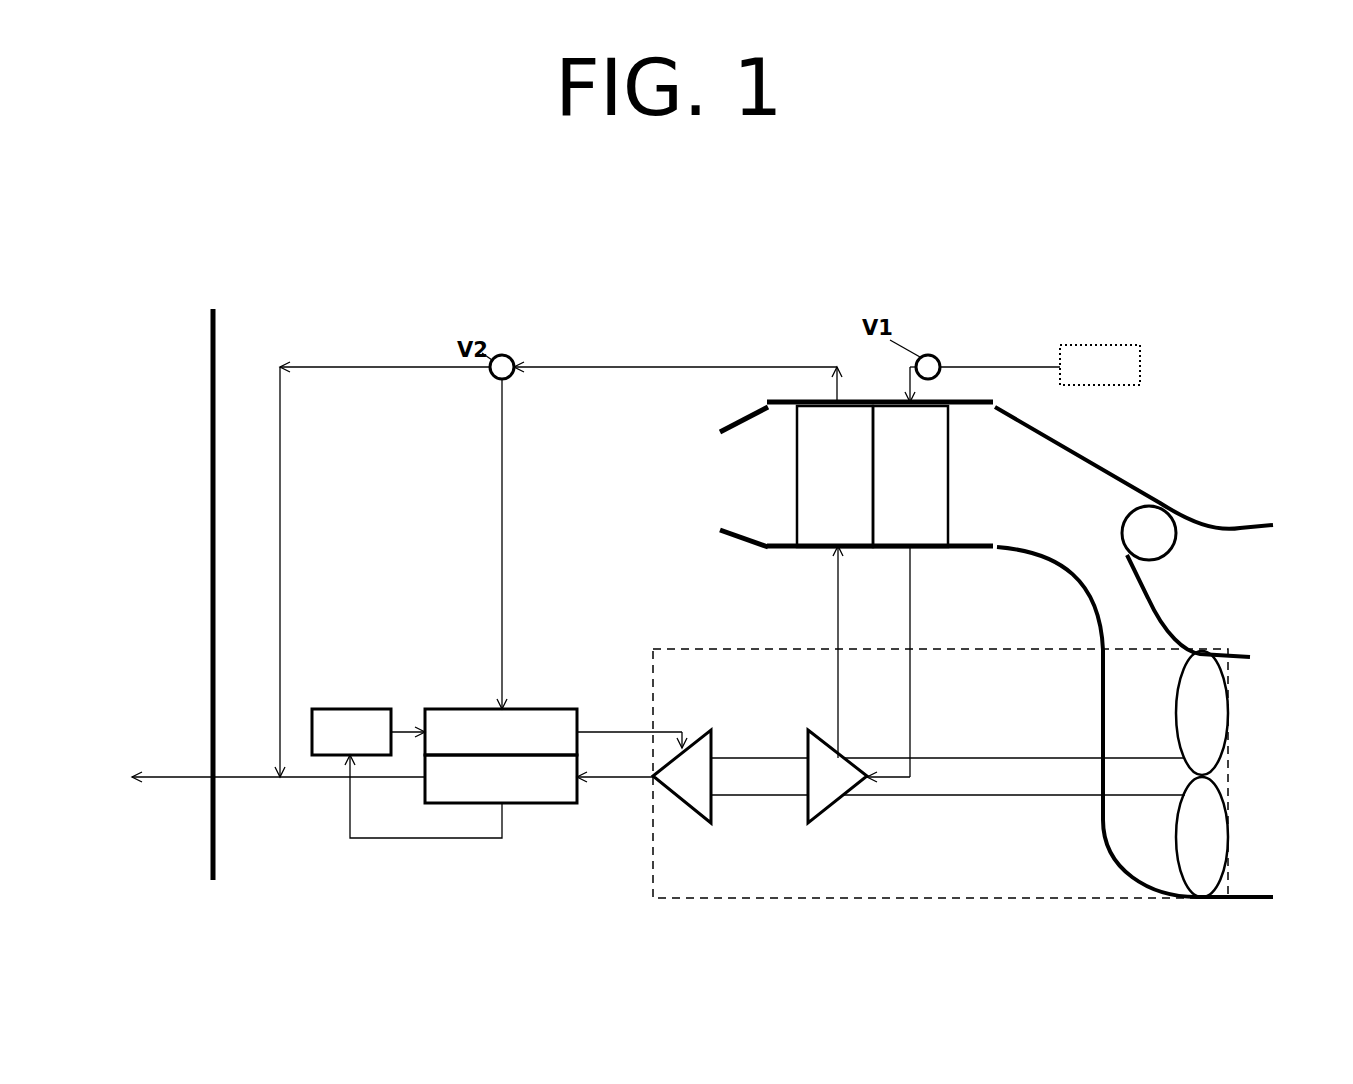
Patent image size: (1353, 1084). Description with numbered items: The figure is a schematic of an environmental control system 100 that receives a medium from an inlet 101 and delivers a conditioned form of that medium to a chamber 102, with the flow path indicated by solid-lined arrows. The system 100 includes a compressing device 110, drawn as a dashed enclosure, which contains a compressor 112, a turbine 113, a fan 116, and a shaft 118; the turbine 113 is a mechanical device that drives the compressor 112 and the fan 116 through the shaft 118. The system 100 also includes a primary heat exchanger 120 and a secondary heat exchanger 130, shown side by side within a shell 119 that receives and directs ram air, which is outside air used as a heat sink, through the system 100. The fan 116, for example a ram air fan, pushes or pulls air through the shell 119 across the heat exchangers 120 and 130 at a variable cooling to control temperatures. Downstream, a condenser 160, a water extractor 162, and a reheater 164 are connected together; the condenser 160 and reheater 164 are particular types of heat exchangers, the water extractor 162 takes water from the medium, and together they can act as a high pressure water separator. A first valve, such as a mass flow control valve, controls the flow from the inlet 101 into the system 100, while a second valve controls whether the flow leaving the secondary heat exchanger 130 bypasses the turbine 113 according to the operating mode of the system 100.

The system 100 is at (1137, 182).
The inlet 101 is at (1100, 365).
The chamber 102 is at (208, 308).
The compressing device 110 is at (748, 900).
The compressor 112 is at (837, 776).
The turbine 113 is at (683, 776).
The fan 116 is at (1158, 830).
The shaft 118 is at (1043, 797).
The shell 119 is at (1148, 498).
The primary heat exchanger 120 is at (910, 476).
The secondary heat exchanger 130 is at (835, 476).
The condenser 160 is at (501, 779).
The water extractor 162 is at (351, 732).
The reheater 164 is at (501, 732).